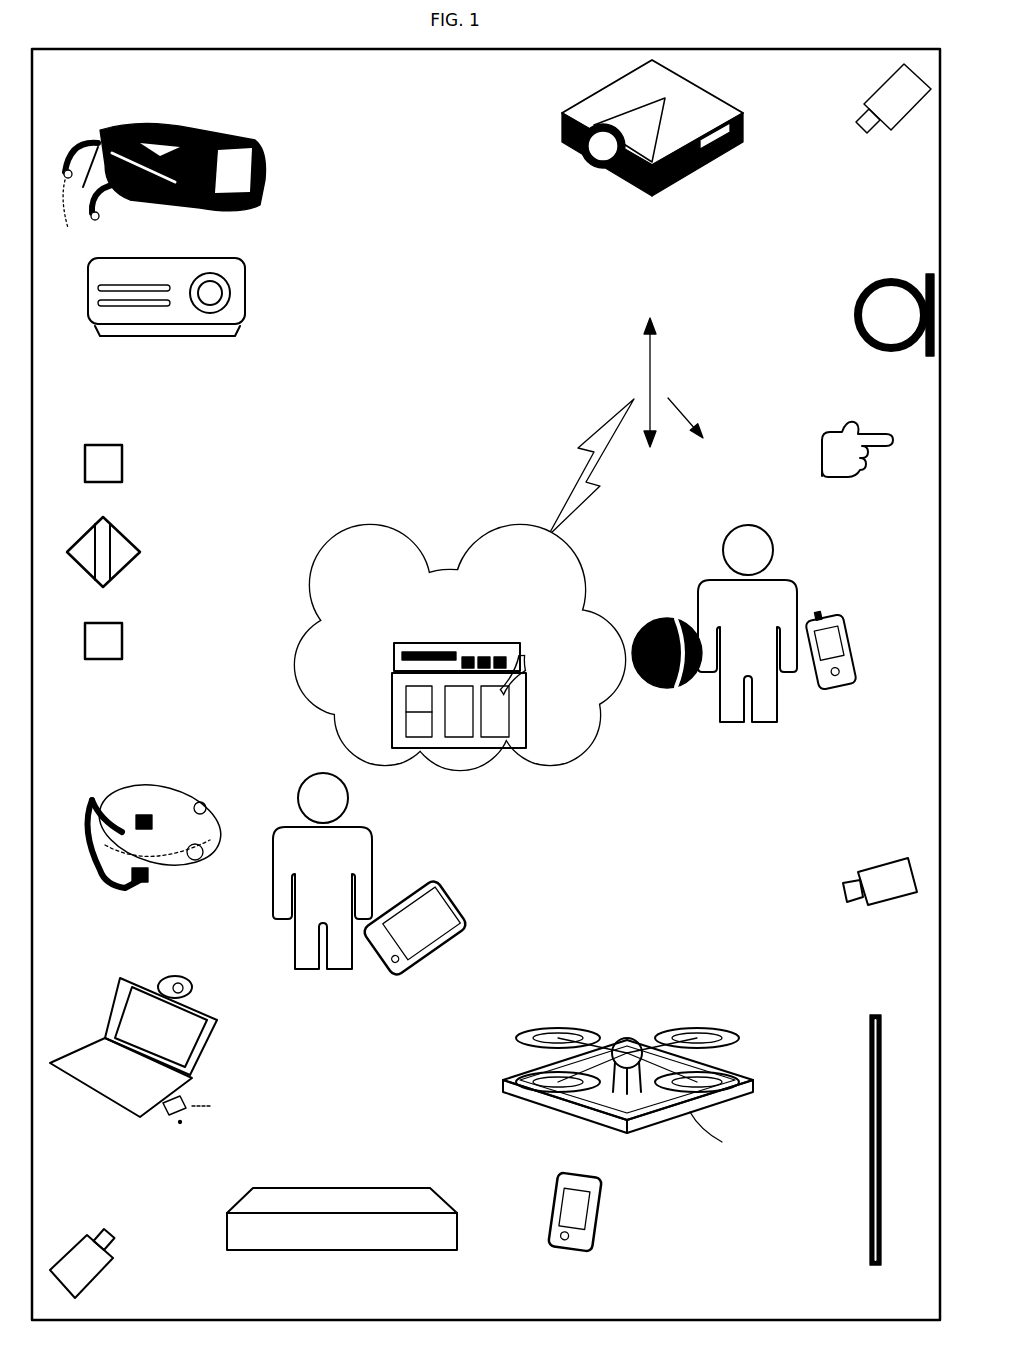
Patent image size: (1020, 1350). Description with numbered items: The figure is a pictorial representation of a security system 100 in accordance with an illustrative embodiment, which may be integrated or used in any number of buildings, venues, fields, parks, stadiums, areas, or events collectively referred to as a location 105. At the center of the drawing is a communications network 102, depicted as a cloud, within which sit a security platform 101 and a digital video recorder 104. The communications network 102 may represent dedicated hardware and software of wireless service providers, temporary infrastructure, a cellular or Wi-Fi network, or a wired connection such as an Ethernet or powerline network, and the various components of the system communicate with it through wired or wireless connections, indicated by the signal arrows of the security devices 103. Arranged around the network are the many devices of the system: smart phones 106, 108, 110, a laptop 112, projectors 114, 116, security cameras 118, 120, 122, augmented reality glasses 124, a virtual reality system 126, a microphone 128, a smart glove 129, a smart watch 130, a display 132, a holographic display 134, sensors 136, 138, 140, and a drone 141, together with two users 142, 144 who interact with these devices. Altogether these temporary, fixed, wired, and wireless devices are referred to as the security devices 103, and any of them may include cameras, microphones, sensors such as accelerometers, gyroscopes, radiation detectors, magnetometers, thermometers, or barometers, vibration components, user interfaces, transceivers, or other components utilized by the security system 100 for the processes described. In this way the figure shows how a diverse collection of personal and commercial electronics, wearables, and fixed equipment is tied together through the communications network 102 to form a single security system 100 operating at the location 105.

The security system 100 is at (443, 95).
The security platform 101 is at (391, 705).
The communications network 102 is at (443, 616).
The security devices 103 is at (625, 427).
The digital video recorder 104 is at (520, 660).
The location 105 is at (452, 318).
The smart phone 106 is at (445, 965).
The smart phone 108 is at (858, 668).
The smart phone 110 is at (603, 1223).
The laptop 112 is at (112, 1012).
The projector 114 is at (680, 178).
The projector 116 is at (248, 283).
The security camera 118 is at (866, 108).
The security camera 120 is at (92, 1228).
The security camera 122 is at (856, 866).
The augmented reality glasses 124 is at (226, 840).
The virtual reality system 126 is at (250, 136).
The microphone 128 is at (880, 278).
The smart glove 129 is at (832, 430).
The smart watch 130 is at (664, 618).
The display 132 is at (862, 1082).
The holographic display 134 is at (430, 1188).
The sensor 136 is at (124, 463).
The sensor 138 is at (140, 550).
The sensor 140 is at (124, 638).
The drone 141 is at (632, 1038).
The user 142 is at (310, 879).
The user 144 is at (735, 620).